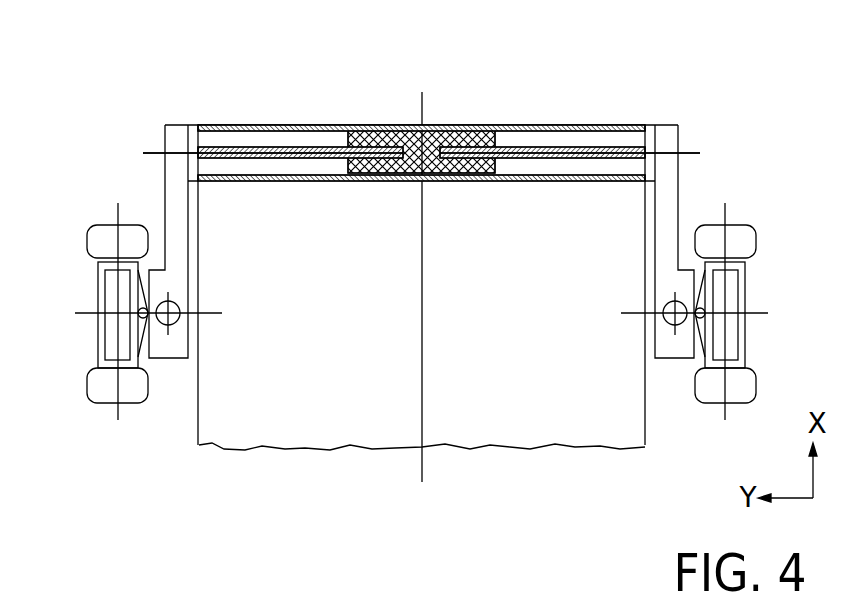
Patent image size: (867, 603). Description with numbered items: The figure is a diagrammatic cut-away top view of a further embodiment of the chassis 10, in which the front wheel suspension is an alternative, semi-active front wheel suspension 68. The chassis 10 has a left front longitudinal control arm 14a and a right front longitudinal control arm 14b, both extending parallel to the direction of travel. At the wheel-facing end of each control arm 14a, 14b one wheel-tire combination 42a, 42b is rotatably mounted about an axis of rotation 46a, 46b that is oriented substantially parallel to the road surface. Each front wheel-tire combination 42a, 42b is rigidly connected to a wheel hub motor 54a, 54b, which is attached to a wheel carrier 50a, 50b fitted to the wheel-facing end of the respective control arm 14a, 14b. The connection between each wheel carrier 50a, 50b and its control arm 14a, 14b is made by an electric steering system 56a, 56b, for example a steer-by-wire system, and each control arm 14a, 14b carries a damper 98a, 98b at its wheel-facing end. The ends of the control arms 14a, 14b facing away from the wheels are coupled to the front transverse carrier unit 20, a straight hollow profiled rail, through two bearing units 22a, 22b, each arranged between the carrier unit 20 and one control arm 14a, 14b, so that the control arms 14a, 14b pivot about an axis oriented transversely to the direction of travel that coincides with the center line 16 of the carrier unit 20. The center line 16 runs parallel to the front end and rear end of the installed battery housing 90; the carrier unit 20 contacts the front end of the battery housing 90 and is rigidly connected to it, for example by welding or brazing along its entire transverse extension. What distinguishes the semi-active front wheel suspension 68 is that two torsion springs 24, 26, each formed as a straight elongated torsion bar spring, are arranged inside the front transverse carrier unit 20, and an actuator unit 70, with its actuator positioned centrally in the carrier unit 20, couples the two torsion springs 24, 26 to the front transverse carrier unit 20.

The chassis 10 is at (22, 66).
The left front longitudinal control arm 14a is at (175, 145).
The right front longitudinal control arm 14b is at (668, 137).
The center line 16 is at (690, 152).
The front transverse carrier unit 20 is at (282, 124).
The bearing unit 22a is at (193, 140).
The bearing unit 22b is at (652, 138).
The torsion spring 24 is at (220, 147).
The torsion spring 26 is at (533, 138).
The wheel-tire combination 42a is at (107, 243).
The wheel-tire combination 42b is at (736, 243).
The axis of rotation 46a is at (222, 314).
The axis of rotation 46b is at (621, 314).
The wheel carrier 50a is at (133, 287).
The wheel carrier 50b is at (710, 287).
The wheel hub motor 54a is at (112, 340).
The wheel hub motor 54b is at (731, 340).
The electric steering system 56a is at (139, 352).
The electric steering system 56b is at (704, 352).
The semi-active front wheel suspension 68 is at (713, 61).
The actuator unit 70 is at (408, 130).
The battery housing 90 is at (485, 425).
The damper 98a is at (170, 322).
The damper 98b is at (673, 322).